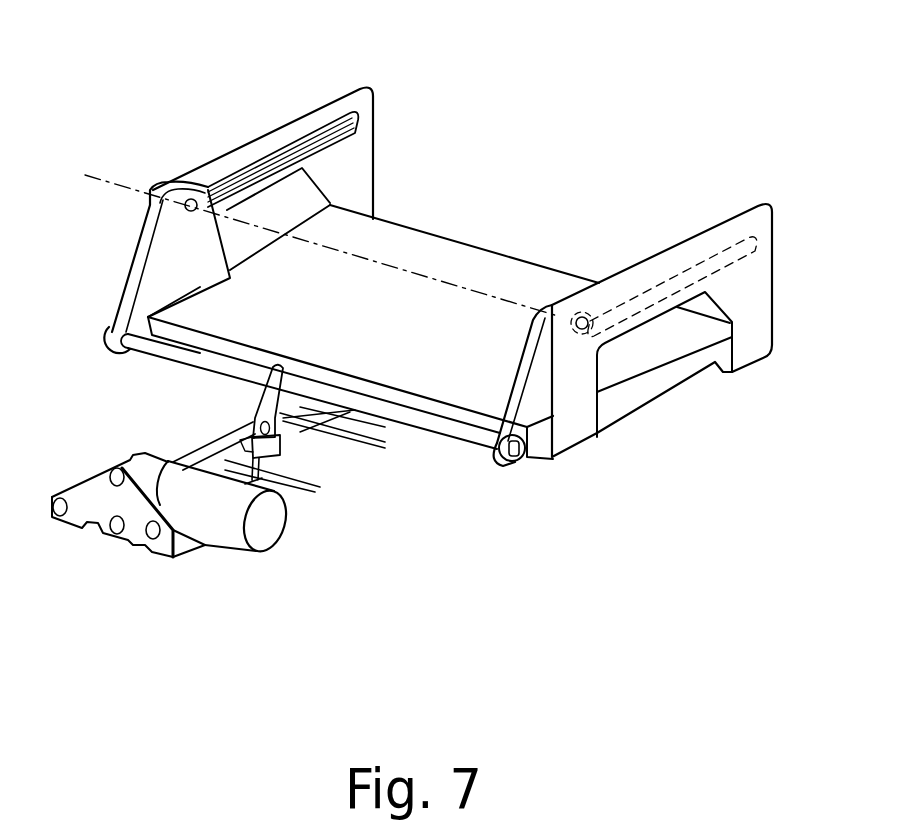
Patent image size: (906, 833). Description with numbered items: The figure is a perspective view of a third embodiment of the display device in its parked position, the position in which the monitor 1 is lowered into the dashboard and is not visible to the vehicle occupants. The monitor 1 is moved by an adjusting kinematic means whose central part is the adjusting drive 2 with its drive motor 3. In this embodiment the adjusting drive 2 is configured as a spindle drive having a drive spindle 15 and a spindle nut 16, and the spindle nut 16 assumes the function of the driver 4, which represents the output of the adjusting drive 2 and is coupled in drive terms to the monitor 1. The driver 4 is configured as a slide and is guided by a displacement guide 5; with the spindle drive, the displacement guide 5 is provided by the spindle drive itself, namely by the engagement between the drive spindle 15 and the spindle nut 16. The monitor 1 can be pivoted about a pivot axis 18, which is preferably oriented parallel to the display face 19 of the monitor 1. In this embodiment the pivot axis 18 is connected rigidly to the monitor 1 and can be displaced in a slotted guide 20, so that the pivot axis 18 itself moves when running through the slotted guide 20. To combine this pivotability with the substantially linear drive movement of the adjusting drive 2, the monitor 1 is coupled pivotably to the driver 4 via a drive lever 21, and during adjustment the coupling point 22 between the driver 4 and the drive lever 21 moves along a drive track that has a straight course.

The monitor 1 is at (627, 395).
The adjusting drive 2 is at (292, 471).
The drive motor 3 is at (263, 527).
The driver 4 is at (323, 415).
The displacement guide 5 is at (203, 483).
The drive spindle 15 is at (128, 505).
The spindle nut 16 is at (512, 448).
The pivot axis 18 is at (112, 182).
The display face 19 is at (670, 387).
The slotted guide 20 is at (318, 130).
The drive lever 21 is at (262, 385).
The coupling point 22 is at (252, 420).